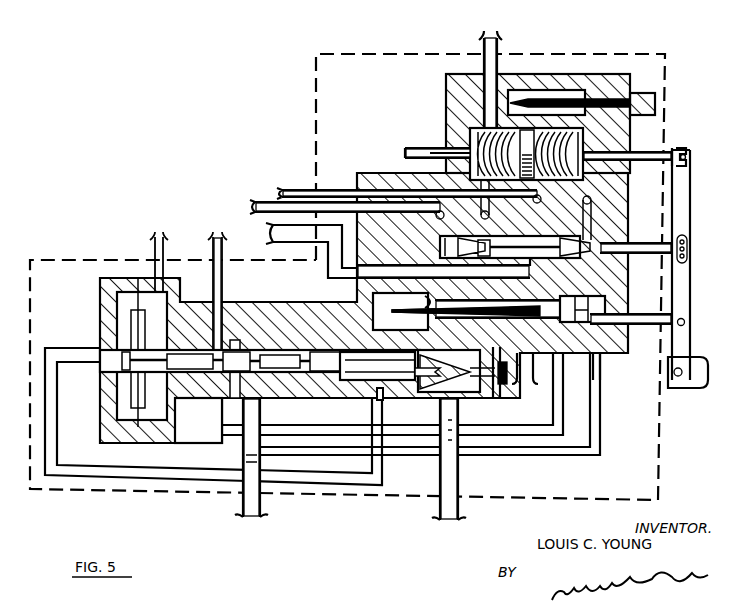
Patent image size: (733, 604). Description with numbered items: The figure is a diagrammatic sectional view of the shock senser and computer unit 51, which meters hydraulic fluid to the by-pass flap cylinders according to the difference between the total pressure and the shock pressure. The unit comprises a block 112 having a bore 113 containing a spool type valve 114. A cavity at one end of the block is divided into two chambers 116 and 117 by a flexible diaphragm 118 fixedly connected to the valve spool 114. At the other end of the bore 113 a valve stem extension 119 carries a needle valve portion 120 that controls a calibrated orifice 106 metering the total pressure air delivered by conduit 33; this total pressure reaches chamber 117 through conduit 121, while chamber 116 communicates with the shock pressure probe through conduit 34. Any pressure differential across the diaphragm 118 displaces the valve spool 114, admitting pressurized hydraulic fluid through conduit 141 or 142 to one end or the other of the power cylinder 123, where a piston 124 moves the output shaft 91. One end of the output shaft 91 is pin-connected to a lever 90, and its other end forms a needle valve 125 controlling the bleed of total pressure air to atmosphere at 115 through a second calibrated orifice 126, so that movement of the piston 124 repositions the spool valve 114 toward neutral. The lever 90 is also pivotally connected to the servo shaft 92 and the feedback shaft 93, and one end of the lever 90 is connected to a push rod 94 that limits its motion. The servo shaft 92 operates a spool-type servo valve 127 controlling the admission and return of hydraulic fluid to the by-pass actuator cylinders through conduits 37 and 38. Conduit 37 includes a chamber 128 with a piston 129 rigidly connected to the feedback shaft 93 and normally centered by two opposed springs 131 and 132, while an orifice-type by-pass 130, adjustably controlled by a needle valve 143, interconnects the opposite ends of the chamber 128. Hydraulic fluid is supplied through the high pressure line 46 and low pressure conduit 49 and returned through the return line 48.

The conduit 33 is at (455, 508).
The conduit 34 is at (155, 248).
The conduit 37 is at (490, 46).
The conduit 38 is at (275, 200).
The high pressure conduit line 46 is at (300, 238).
The hydraulic return line 48 is at (224, 283).
The conduit 49 is at (243, 500).
The shock senser unit 51 is at (656, 41).
The lever 90 is at (688, 187).
The shock senser output shaft 91 is at (630, 322).
The servo shaft 92 is at (652, 243).
The feedback shaft 93 is at (665, 156).
The push rod 94 is at (696, 380).
The calibrated orifice 106 is at (415, 358).
The block 112 is at (616, 122).
The bore 113 is at (226, 378).
The spool type valve 114 is at (326, 405).
The atmosphere bleed 115 is at (527, 372).
The chamber 116 is at (150, 418).
The chamber 117 is at (128, 412).
The flexible diaphragm 118 is at (112, 294).
The valve stem extension 119 is at (340, 356).
The needle valve portion 120 is at (384, 394).
The conduit 121 is at (120, 478).
The power cylinder 123 is at (603, 356).
The piston 124 is at (590, 300).
The needle valve 125 is at (380, 318).
The second calibrated orifice 126 is at (428, 303).
The servo valve 127 is at (553, 258).
The chamber 128 is at (470, 125).
The piston 129 is at (535, 134).
The orifice-type by-pass 130 is at (555, 97).
The spring 131 is at (580, 166).
The spring 132 is at (460, 168).
The conduit 141 is at (505, 428).
The conduit 142 is at (545, 450).
The needle valve 143 is at (532, 100).